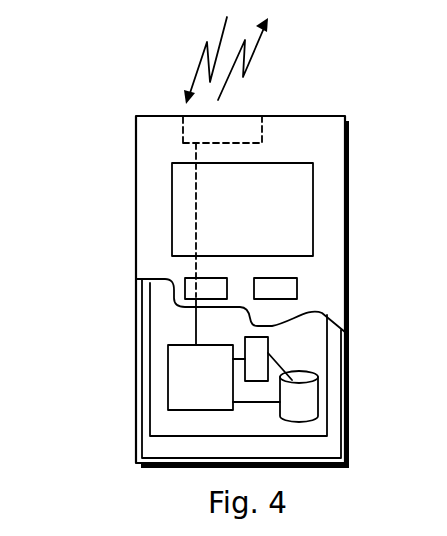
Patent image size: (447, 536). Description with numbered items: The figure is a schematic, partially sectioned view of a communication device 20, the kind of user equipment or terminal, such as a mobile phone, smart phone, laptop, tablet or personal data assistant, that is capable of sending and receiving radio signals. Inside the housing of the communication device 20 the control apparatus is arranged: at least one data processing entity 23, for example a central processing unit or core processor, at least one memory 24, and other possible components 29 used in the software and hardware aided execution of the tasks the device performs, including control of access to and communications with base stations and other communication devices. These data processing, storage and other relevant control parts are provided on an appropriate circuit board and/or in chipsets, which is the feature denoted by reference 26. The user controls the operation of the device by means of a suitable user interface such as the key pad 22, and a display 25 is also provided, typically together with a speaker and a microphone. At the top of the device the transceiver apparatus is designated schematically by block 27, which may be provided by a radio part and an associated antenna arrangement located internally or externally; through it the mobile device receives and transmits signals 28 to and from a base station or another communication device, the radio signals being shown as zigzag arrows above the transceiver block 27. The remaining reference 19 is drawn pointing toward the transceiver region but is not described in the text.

The incident light 19 is at (190, 92).
The communication device 20 is at (136, 148).
The key pad 22 is at (187, 288).
The data processing entity 23 is at (172, 366).
The memory 24 is at (297, 403).
The display 25 is at (185, 201).
The circuit board 26 is at (167, 424).
The transceiver apparatus 27 is at (185, 132).
The signals 28 is at (245, 77).
The other components 29 is at (257, 350).